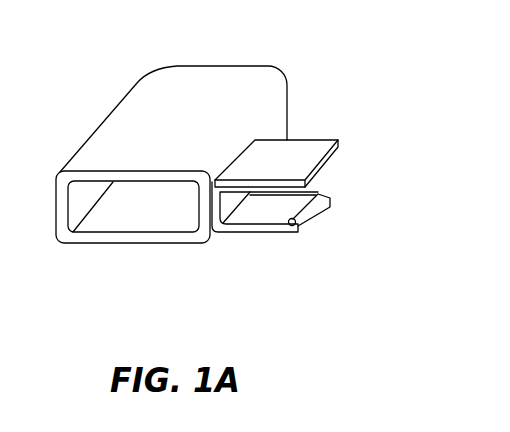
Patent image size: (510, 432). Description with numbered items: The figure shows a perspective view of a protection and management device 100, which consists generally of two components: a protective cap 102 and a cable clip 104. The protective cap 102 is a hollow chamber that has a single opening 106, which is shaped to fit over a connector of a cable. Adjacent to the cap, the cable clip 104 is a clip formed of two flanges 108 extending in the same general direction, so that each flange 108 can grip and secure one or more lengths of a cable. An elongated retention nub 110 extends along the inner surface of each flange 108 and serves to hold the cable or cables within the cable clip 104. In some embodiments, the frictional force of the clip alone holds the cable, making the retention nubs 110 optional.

The protection and management device 100 is at (331, 67).
The protective cap 102 is at (142, 107).
The cable clip 104 is at (297, 248).
The opening 106 is at (98, 223).
The flange 108 is at (302, 150).
The retention nub 110 is at (323, 190).